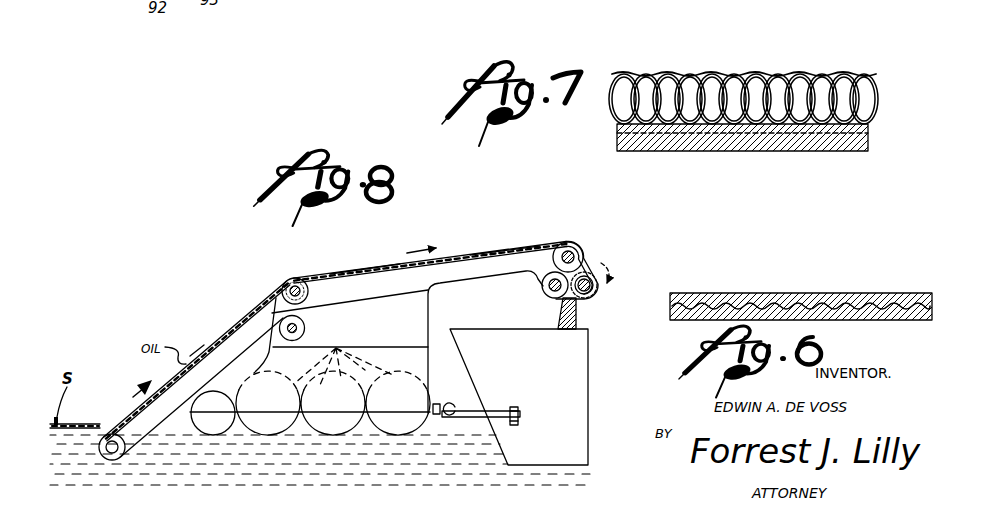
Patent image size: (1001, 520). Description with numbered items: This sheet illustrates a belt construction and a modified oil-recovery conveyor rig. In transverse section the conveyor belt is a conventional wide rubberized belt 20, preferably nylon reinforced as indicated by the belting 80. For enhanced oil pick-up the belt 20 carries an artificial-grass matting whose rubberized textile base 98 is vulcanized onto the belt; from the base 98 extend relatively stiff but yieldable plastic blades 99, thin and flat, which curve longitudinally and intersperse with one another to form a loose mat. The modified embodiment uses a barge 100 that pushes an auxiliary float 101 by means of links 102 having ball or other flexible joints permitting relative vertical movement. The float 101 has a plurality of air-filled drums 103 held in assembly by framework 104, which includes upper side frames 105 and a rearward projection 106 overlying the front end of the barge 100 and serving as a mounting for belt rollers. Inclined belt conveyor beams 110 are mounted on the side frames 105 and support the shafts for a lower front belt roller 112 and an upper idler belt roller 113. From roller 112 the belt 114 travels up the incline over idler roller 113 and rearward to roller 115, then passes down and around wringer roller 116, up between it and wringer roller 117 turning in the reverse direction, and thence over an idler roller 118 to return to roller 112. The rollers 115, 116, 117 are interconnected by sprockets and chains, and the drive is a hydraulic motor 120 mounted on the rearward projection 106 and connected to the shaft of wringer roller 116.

In FIG. 7, the rubberized belt 20 is at (850, 151).
In FIG. 6, the rubberized belt 20 is at (800, 293).
In FIG. 6, the nylon reinforced rubberized belting 80 is at (863, 293).
In FIG. 7, the rubberized textile base 98 is at (612, 130).
In FIG. 7, the blades 99 is at (736, 70).
In FIG. 8, the barge 100 is at (475, 335).
In FIG. 8, the auxiliary float 101 is at (438, 374).
In FIG. 8, the links 102 is at (470, 411).
In FIG. 8, the air-filled drums 103 is at (335, 350).
In FIG. 8, the framework 104 is at (203, 413).
In FIG. 8, the upper side frames 105 is at (333, 272).
In FIG. 8, the rearward projection 106 is at (524, 245).
In FIG. 8, the inclined belt conveyor beams 110 is at (239, 323).
In FIG. 8, the lower front belt roller 112 is at (104, 426).
In FIG. 8, the upper idler belt roller 113 is at (287, 278).
In FIG. 8, the belt 114 is at (197, 358).
In FIG. 8, the roller 115 is at (580, 243).
In FIG. 8, the wringer roller 116 is at (596, 300).
In FIG. 8, the wringer roller 117 is at (543, 288).
In FIG. 8, the idler roller 118 is at (316, 312).
In FIG. 8, the hydraulic motor 120 is at (604, 259).